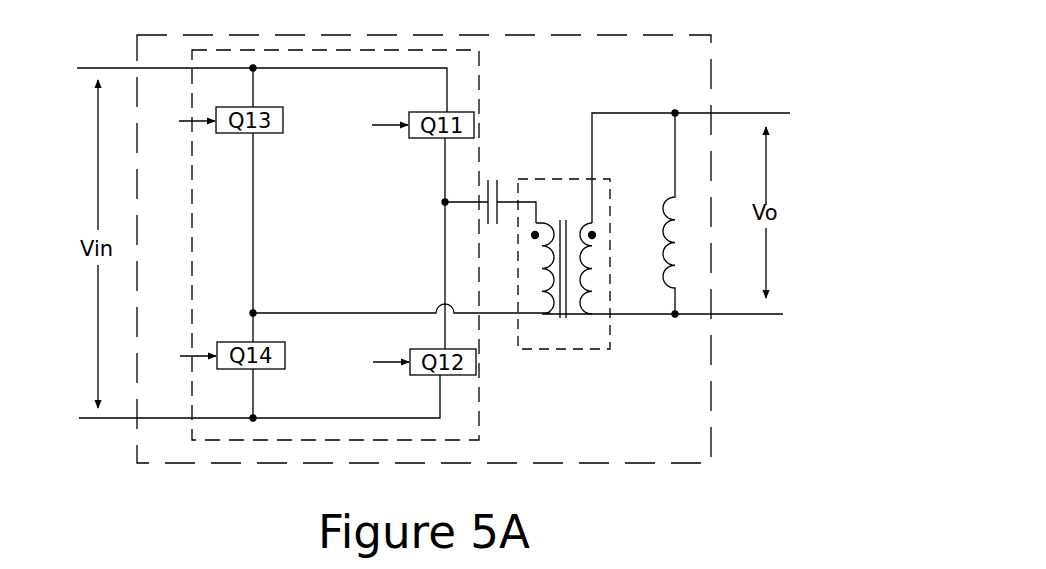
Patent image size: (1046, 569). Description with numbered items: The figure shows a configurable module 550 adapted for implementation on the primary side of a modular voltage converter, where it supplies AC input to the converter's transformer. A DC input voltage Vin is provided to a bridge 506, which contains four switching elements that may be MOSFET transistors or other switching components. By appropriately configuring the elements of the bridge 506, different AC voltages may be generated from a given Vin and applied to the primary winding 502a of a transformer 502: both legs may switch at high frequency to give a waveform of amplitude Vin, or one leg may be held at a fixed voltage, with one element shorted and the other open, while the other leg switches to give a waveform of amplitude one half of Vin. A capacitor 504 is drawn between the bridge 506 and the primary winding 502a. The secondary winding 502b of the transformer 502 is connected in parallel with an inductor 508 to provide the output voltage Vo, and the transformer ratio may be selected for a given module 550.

The configurable module 550 is at (137, 36).
The bridge 506 is at (481, 80).
The resonant capacitor 504 is at (506, 176).
The transformer 502 is at (600, 302).
The primary winding 502a is at (544, 327).
The secondary winding 502b is at (580, 327).
The inductor 508 is at (650, 191).